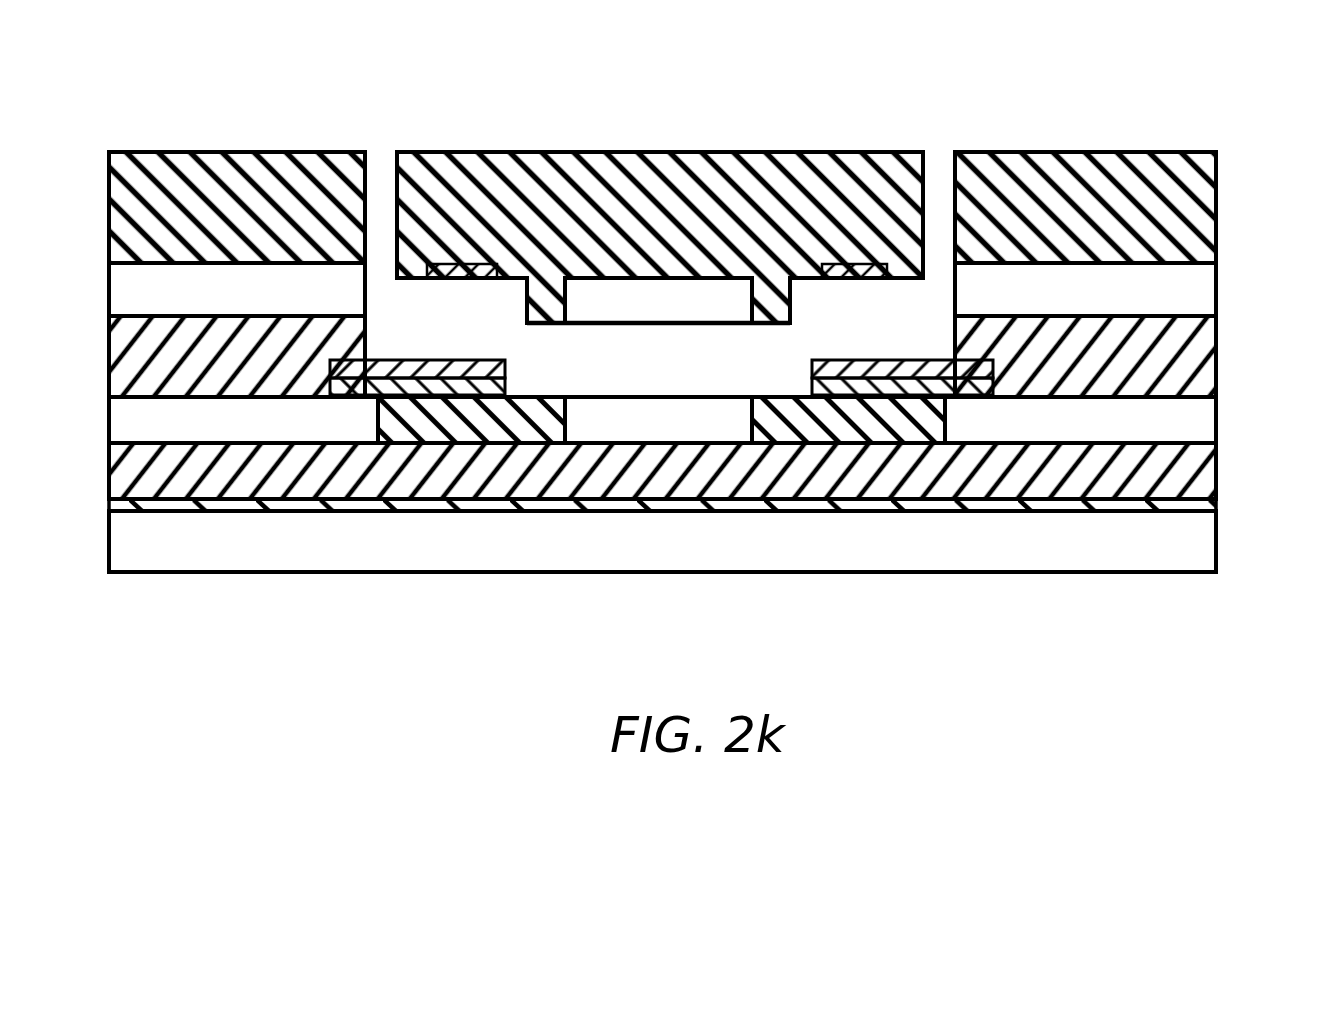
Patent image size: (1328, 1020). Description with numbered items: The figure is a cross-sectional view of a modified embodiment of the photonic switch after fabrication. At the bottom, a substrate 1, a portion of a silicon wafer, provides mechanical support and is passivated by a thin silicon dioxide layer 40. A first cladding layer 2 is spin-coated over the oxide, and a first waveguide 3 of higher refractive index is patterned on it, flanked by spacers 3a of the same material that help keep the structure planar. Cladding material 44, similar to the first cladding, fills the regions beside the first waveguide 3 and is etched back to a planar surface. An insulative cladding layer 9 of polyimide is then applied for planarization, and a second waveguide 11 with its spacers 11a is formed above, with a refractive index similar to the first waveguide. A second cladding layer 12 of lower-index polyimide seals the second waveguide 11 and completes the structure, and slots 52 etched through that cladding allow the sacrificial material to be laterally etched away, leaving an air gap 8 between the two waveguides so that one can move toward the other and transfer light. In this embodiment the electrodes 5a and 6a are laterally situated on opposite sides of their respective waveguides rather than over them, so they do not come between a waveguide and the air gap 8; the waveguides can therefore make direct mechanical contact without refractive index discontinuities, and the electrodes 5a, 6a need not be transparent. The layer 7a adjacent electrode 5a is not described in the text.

The substrate 1 is at (1190, 533).
The first cladding layer 2 is at (1203, 470).
The first waveguide 3 is at (667, 430).
The spacers 3a is at (158, 422).
The electrode 5a is at (492, 387).
The electrode 6a is at (470, 268).
The contact layer 7a is at (425, 369).
The air gap 8 is at (664, 353).
The insulative cladding layer 9 is at (140, 346).
The second waveguide 11 is at (671, 305).
The spacers 11a is at (140, 286).
The second cladding layer 12 is at (125, 215).
The silicon dioxide layer 40 is at (1200, 503).
The cladding material 44 is at (493, 430).
The slots 52 is at (382, 168).